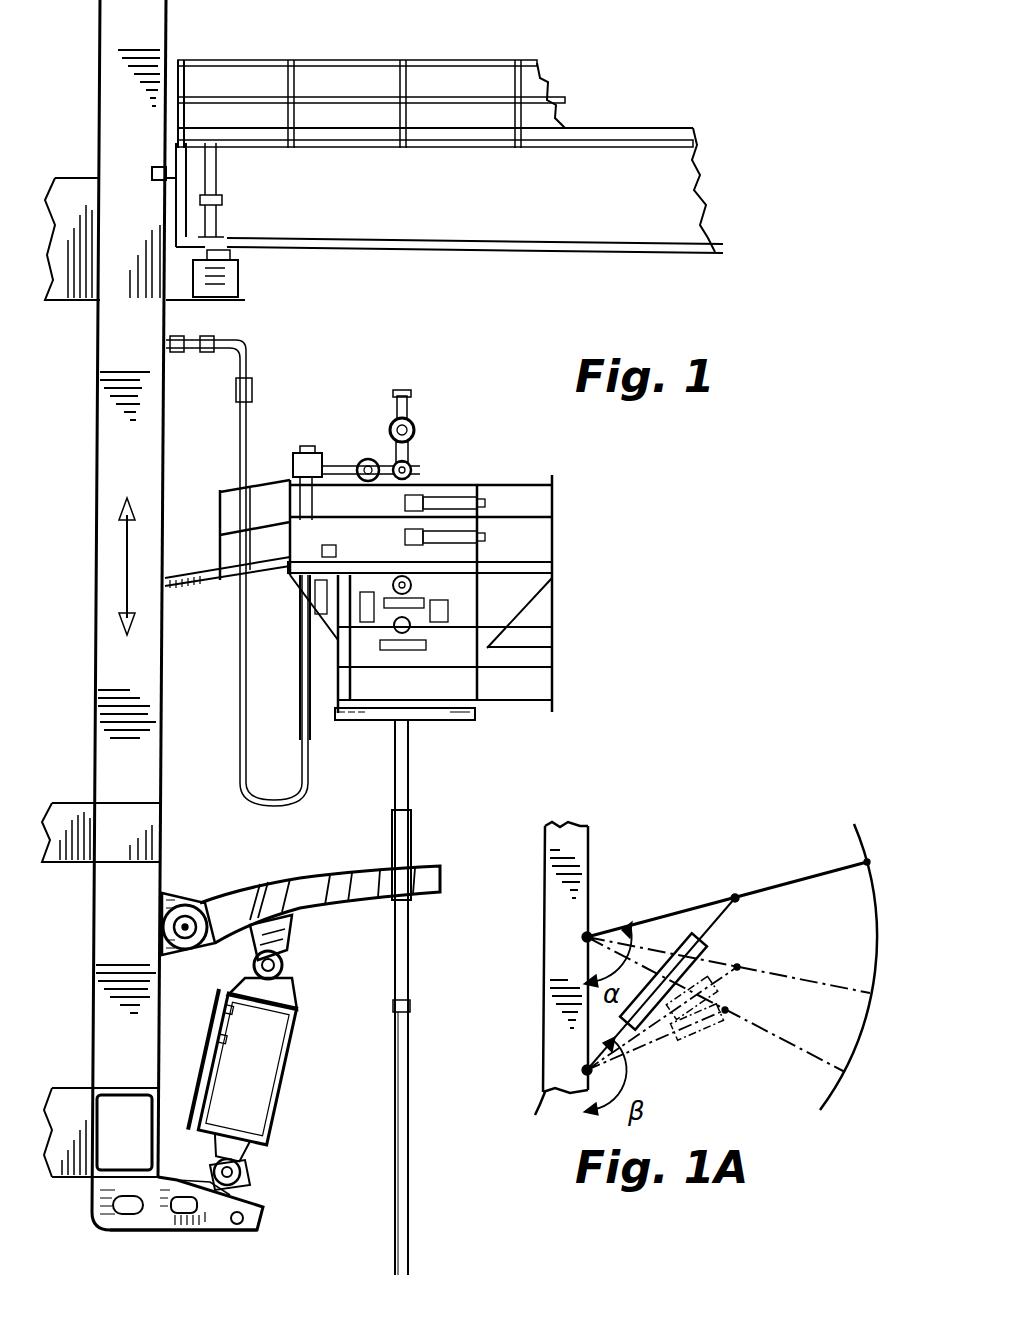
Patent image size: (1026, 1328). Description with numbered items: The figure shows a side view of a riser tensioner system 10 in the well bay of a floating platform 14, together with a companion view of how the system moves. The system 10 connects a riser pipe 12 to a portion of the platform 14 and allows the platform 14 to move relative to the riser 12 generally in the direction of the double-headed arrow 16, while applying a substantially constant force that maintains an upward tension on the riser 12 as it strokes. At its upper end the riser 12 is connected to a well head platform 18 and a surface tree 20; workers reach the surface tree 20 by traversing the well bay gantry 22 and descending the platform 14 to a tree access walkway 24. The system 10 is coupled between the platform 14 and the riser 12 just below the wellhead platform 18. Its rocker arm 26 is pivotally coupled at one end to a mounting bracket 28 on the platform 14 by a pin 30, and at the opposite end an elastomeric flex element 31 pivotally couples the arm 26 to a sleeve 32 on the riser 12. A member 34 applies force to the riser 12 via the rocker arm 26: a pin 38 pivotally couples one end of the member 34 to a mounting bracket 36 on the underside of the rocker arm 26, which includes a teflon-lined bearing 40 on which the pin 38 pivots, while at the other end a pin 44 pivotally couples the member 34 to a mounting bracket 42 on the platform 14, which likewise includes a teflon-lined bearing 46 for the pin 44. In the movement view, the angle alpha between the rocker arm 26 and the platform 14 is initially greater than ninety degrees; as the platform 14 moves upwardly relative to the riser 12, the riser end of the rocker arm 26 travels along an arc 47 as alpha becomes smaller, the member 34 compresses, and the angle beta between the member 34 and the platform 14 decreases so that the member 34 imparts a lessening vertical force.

In FIG. 1, the riser tensioner system 10 is at (338, 1228).
In FIG. 1, the riser pipe 12 is at (410, 1140).
In FIG. 1, the floating platform 14 is at (114, 93).
In FIG. 1A, the floating platform 14 is at (550, 1088).
In FIG. 1, the double-headed arrow 16 is at (122, 562).
In FIG. 1, the well head platform 18 is at (440, 725).
In FIG. 1, the surface tree 20 is at (423, 427).
In FIG. 1, the well bay gantry 22 is at (325, 60).
In FIG. 1, the tree access walkway 24 is at (188, 590).
In FIG. 1, the rocker arm 26 is at (318, 873).
In FIG. 1A, the rocker arm 26 is at (765, 885).
In FIG. 1, the mounting bracket 28 is at (175, 905).
In FIG. 1, the pin 30 is at (190, 915).
In FIG. 1, the elastomeric flex element 31 is at (415, 862).
In FIG. 1, the sleeve 32 is at (408, 977).
In FIG. 1, the member 34 is at (292, 1062).
In FIG. 1A, the member 34 is at (690, 935).
In FIG. 1, the mounting bracket 36 is at (290, 932).
In FIG. 1, the pin 38 is at (284, 960).
In FIG. 1, the teflon-lined bearing 40 is at (282, 975).
In FIG. 1, the mounting bracket 42 is at (205, 1225).
In FIG. 1, the pin 44 is at (243, 1177).
In FIG. 1, the teflon-lined bearing 46 is at (245, 1165).
In FIG. 1A, the arc 47 is at (852, 833).